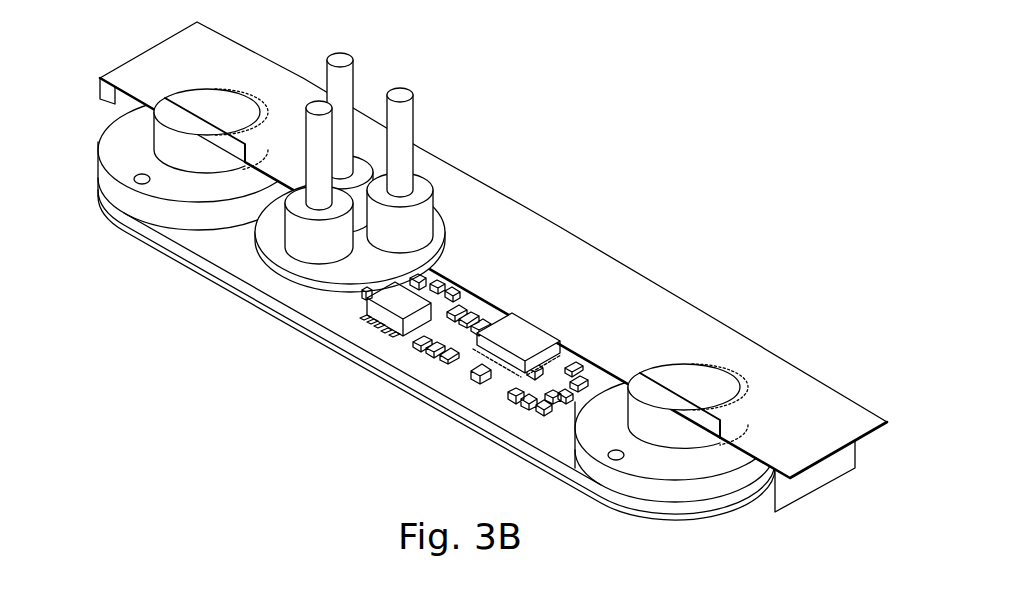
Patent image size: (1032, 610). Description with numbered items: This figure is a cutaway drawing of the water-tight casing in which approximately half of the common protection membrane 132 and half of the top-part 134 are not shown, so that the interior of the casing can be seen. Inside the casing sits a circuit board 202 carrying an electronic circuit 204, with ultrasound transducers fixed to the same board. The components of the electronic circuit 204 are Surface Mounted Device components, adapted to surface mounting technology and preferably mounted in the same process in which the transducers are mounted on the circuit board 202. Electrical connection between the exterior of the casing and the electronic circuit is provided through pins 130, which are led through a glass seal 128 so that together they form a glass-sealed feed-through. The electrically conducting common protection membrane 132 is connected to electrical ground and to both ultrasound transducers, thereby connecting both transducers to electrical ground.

The glass seal 128 is at (265, 230).
The pins 130 is at (345, 72).
The common protection membrane 132 is at (818, 477).
The top-part 134 is at (602, 293).
The circuit board 202 is at (338, 317).
The electronic circuit 204 is at (488, 342).